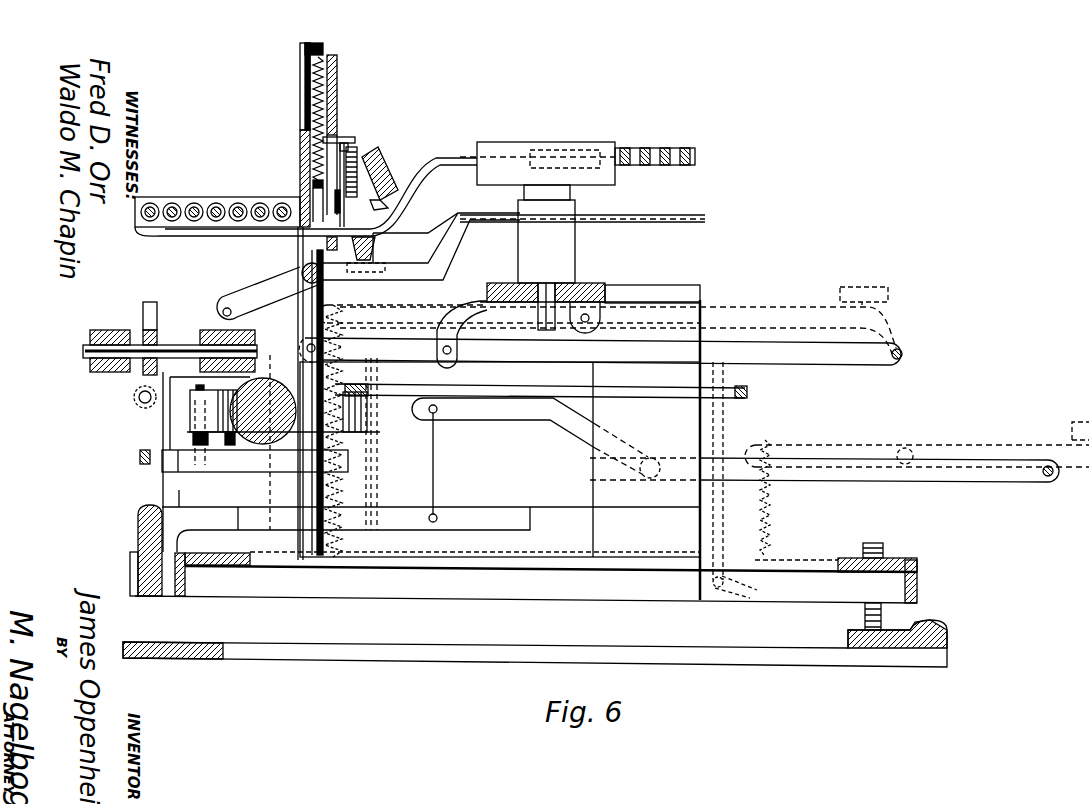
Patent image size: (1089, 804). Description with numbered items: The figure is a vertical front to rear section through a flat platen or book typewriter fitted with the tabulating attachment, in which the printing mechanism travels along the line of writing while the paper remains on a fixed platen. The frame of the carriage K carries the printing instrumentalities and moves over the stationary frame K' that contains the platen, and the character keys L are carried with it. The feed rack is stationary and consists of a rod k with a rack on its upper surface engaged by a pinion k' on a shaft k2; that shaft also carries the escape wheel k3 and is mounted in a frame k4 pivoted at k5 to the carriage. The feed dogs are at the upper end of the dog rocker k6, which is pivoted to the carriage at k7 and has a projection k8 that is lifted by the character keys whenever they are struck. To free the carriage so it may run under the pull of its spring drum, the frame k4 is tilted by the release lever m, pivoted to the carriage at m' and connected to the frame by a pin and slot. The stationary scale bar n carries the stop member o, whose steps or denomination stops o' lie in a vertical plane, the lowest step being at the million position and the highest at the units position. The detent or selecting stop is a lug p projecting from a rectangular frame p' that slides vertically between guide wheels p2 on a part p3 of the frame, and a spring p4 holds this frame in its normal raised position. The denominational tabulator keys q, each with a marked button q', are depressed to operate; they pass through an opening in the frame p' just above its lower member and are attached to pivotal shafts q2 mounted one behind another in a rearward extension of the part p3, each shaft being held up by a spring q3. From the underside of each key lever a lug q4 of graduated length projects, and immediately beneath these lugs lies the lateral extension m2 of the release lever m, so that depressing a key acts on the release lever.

The spring q3 is at (210, 200).
The pivotal shaft q2 is at (240, 200).
The denominational tabulator key q is at (306, 197).
The button q' is at (577, 203).
The lug q4 is at (382, 246).
The part of the frame p3 is at (300, 172).
The spring p4 is at (326, 78).
The rectangular frame p' is at (346, 152).
The lug p is at (342, 169).
The guide wheels p2 is at (350, 207).
The stop member o is at (368, 161).
The denomination stops o' is at (359, 132).
The scale bar n is at (394, 168).
The lever m is at (511, 246).
The pivot m' is at (327, 282).
The lateral extension m2 is at (383, 275).
The character keys L is at (862, 290).
The rod k is at (271, 462).
The pinion k' is at (270, 289).
The shaft k2 is at (180, 345).
The escape wheel k3 is at (152, 302).
The frame k4 is at (118, 330).
The pivot k5 is at (138, 400).
The dog rocker k6 is at (139, 541).
The pivot k7 is at (140, 577).
The projection k8 is at (431, 475).
The frame of the carriage K is at (526, 451).
The stationary frame K' is at (535, 613).